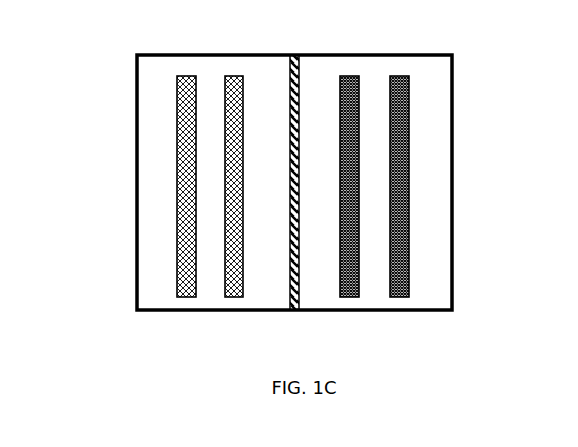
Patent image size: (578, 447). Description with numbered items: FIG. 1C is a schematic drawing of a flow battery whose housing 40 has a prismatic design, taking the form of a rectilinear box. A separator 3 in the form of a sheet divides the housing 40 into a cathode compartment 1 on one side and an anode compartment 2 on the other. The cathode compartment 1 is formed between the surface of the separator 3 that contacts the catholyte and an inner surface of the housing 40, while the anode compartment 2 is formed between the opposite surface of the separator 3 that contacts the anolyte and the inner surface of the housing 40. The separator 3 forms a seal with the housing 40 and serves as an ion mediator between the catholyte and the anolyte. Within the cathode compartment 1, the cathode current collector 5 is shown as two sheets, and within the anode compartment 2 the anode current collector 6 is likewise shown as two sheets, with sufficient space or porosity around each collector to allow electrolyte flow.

The cathode compartment 1 is at (145, 262).
The anode compartment 2 is at (427, 275).
The separator 3 is at (295, 57).
The cathode current collector 5 is at (237, 75).
The anode current collector 6 is at (345, 75).
The housing 40 is at (453, 130).